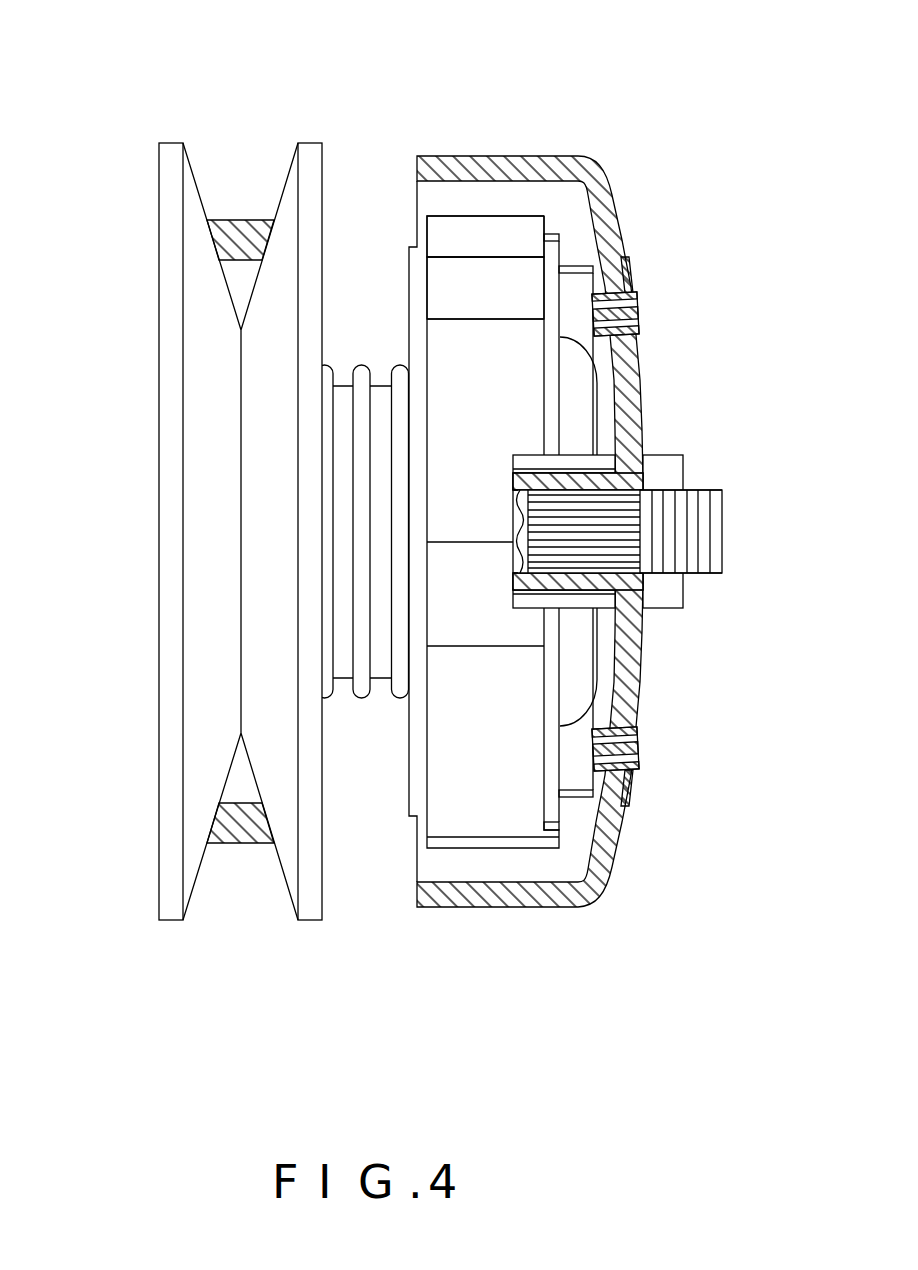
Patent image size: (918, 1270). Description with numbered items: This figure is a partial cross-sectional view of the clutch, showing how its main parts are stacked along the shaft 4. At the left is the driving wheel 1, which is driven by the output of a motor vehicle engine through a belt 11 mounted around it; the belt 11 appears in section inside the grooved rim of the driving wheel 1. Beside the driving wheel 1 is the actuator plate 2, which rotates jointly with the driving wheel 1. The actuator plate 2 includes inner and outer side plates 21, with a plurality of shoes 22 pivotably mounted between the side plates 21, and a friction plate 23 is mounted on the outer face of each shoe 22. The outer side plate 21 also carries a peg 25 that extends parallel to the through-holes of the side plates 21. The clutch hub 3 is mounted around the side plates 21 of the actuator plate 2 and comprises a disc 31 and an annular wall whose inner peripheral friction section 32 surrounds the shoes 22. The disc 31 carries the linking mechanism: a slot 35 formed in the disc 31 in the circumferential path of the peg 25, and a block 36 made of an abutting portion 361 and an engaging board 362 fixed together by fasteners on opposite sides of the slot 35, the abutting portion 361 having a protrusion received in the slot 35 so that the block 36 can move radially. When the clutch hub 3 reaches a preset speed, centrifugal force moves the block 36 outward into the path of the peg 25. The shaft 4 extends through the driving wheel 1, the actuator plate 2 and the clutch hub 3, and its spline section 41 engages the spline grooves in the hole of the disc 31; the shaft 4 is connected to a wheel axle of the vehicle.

The driving wheel 1 is at (218, 478).
The belt 11 is at (237, 227).
The actuator plate 2 is at (497, 424).
The side plate 21 is at (583, 270).
The shoe 22 is at (548, 290).
The friction plate 23 is at (486, 216).
The peg 25 is at (602, 277).
The clutch hub 3 is at (576, 464).
The disc 31 is at (633, 372).
The friction section 32 is at (490, 293).
The slot 35 is at (619, 253).
The block 36 is at (687, 441).
The abutting portion 361 is at (622, 250).
The engaging board 362 is at (635, 278).
The shaft 4 is at (638, 496).
The spline section 41 is at (618, 525).